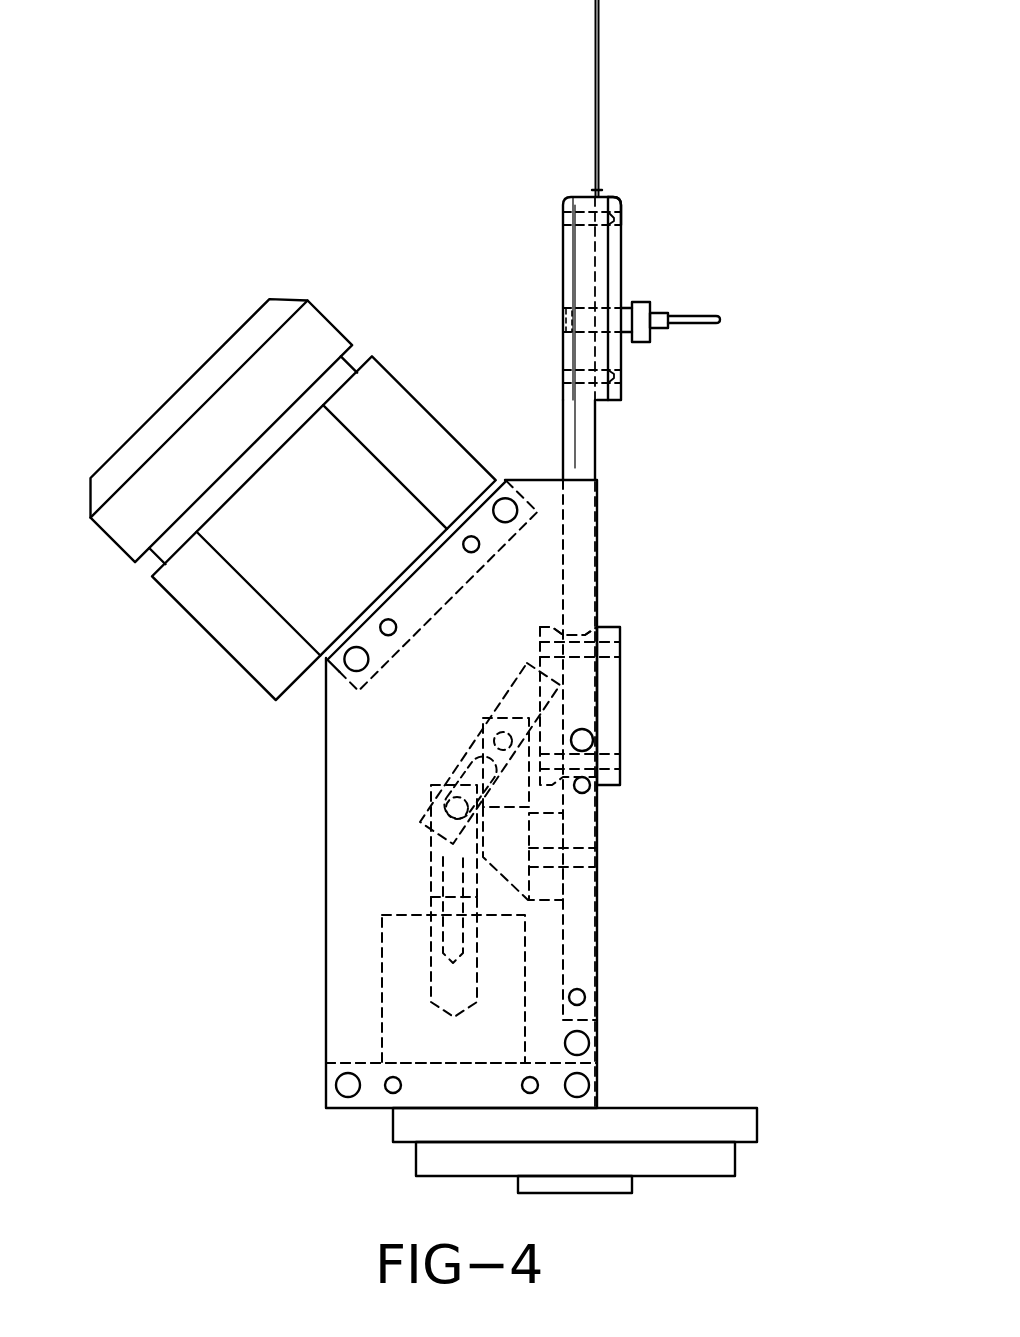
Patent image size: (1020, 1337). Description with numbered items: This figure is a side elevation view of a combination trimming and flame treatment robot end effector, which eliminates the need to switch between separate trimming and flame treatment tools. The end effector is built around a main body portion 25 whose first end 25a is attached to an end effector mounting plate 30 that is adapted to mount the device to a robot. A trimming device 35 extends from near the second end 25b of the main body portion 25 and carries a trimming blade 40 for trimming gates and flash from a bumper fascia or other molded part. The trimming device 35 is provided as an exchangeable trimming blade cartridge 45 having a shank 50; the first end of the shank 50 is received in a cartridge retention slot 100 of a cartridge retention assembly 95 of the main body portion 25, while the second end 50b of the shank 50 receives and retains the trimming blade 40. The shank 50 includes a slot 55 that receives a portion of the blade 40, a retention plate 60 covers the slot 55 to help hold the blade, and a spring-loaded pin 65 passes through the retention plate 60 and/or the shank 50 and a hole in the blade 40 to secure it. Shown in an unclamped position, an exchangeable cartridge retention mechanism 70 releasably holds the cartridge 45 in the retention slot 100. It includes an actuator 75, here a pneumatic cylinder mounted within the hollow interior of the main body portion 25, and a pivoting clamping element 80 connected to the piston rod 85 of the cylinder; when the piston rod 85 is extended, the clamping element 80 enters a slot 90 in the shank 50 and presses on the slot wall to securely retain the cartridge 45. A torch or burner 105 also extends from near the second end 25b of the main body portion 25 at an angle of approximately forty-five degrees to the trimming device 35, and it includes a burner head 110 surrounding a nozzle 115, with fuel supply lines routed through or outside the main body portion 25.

The main body portion 25 is at (326, 838).
The first end 25a is at (322, 1045).
The second end 25b is at (605, 525).
The end effector mounting plate 30 is at (695, 1125).
The trimming device 35 is at (610, 234).
The trimming blade 40 is at (598, 33).
The exchangeable trimming blade cartridge 45 is at (720, 312).
The shank 50 is at (585, 430).
The second end of shank 50b is at (545, 205).
The slot 55 is at (595, 196).
The retention plate 60 is at (621, 197).
The spring-loaded pin 65 is at (660, 335).
The exchangeable cartridge retention mechanism 70 is at (417, 785).
The actuator 75 is at (382, 968).
The pivoting clamping element 80 is at (453, 765).
The piston rod 85 is at (428, 883).
The slot 90 is at (583, 657).
The cartridge retention assembly 95 is at (632, 735).
The cartridge retention slot 100 is at (590, 628).
The torch (burner) 105 is at (308, 418).
The burner head 110 is at (238, 347).
The nozzle 115 is at (113, 457).